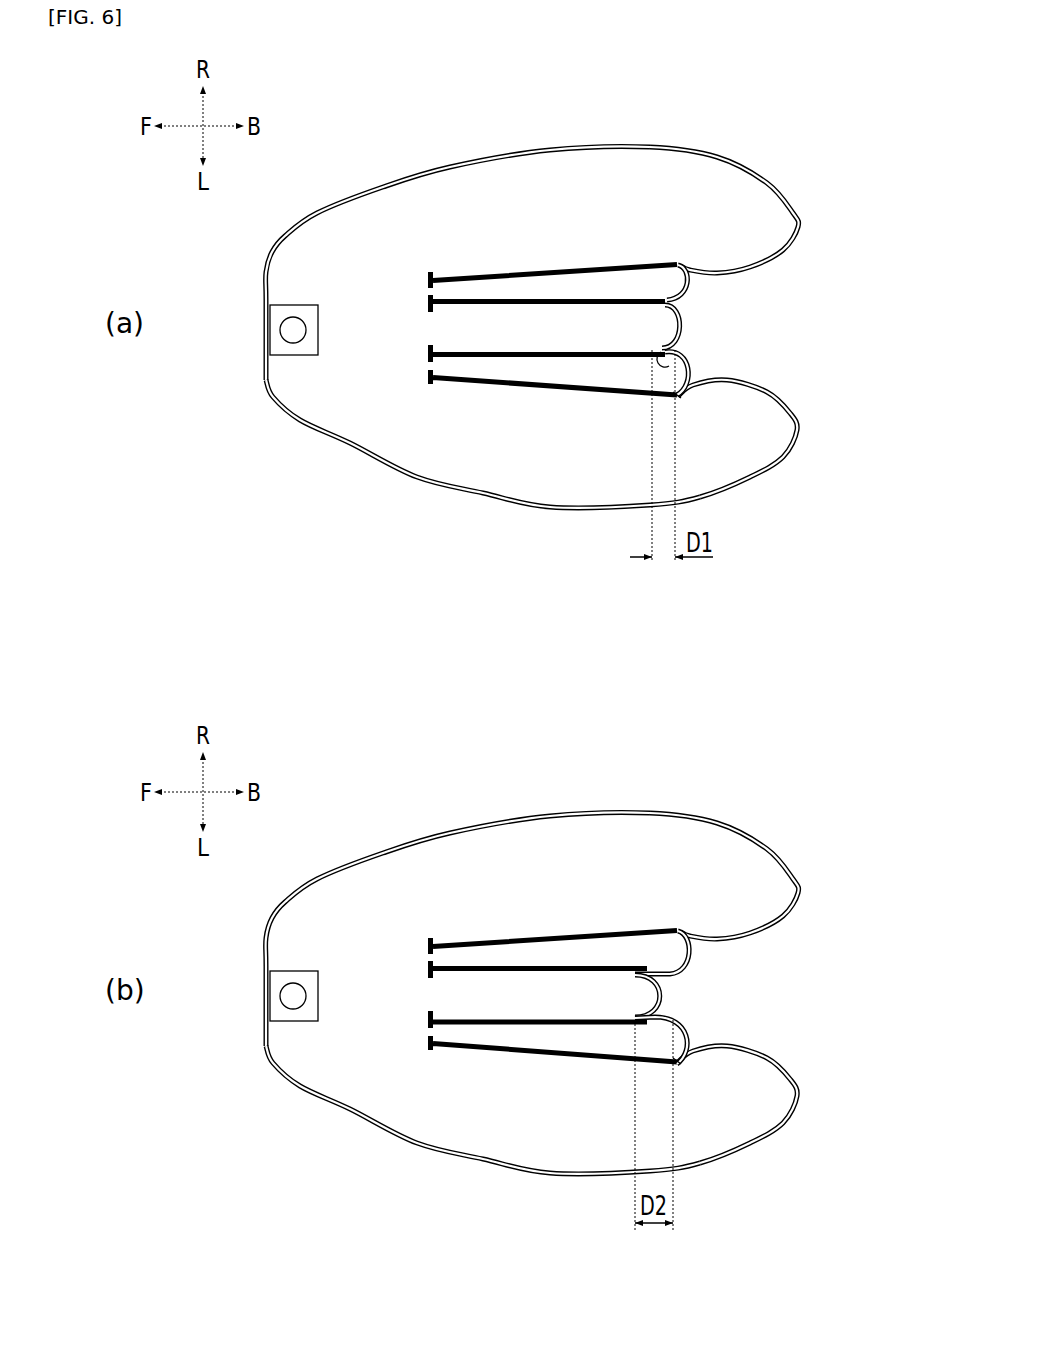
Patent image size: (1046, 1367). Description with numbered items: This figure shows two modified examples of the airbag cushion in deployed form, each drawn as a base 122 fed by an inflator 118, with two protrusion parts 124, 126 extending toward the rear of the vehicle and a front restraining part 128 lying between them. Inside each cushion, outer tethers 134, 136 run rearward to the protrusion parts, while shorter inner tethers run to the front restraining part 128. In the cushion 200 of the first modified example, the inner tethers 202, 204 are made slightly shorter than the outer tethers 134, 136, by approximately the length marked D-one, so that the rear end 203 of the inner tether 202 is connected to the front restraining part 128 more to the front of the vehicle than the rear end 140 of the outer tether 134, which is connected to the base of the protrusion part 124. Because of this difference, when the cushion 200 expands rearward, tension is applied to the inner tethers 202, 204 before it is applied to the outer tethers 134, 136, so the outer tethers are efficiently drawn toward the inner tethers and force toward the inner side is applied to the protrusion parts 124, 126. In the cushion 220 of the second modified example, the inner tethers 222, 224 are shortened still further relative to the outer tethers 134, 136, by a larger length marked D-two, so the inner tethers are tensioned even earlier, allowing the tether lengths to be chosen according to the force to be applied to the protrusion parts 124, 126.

The cushion of Modified Example 1 200 is at (388, 190).
The cushion of Modified Example 2 220 is at (388, 856).
The inflator 118 is at (281, 327).
The base 122 is at (366, 455).
The protrusion part 124 is at (781, 459).
The protrusion part 126 is at (779, 191).
The front restraining part 128 is at (684, 324).
The outer tether 134 is at (542, 387).
The outer tether 136 is at (585, 268).
The one end of the outer tether 140 is at (676, 399).
The inner tether 202 is at (491, 358).
The rear end of the inner tether 203 is at (677, 357).
The inner tether 204 is at (487, 299).
The inner tether 222 is at (491, 1025).
The inner tether 224 is at (487, 965).